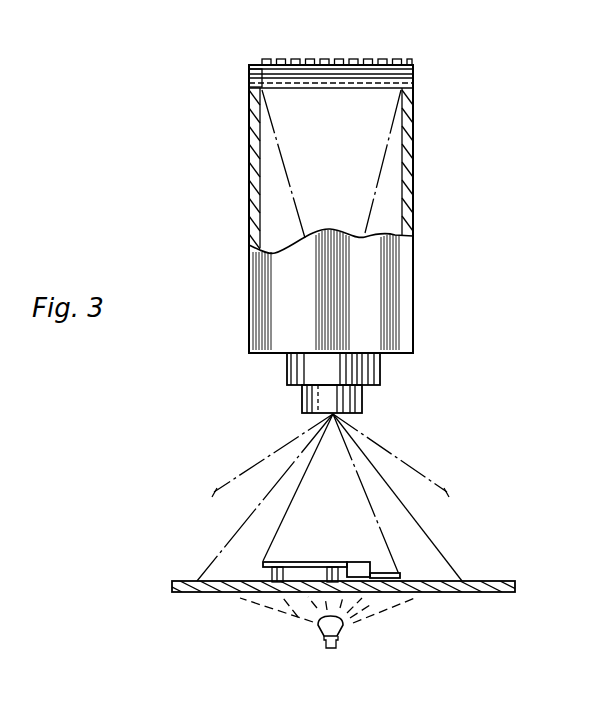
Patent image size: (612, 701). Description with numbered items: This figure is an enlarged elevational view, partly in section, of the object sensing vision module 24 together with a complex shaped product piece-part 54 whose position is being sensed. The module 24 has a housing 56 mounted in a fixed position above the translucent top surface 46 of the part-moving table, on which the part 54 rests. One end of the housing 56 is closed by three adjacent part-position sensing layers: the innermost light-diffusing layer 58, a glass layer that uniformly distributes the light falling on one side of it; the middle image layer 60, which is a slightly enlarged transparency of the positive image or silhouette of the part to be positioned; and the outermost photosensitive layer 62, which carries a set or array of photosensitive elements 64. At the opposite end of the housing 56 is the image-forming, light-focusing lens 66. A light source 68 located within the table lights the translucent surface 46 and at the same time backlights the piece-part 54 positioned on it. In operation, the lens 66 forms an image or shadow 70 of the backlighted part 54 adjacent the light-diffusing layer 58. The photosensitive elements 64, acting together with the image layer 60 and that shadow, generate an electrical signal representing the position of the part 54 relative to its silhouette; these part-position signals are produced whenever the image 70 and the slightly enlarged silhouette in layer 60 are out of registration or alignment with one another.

The vision module 24 is at (433, 188).
The surface 46 is at (497, 580).
The part 54 is at (336, 560).
The housing 56 is at (403, 287).
The light-diffusing layer 58 is at (414, 83).
The image layer 60 is at (414, 75).
The photosensitive layer 62 is at (413, 66).
The photosensitive elements 64 is at (276, 59).
The lens 66 is at (380, 367).
The light source 68 is at (340, 635).
The image 70 is at (257, 72).